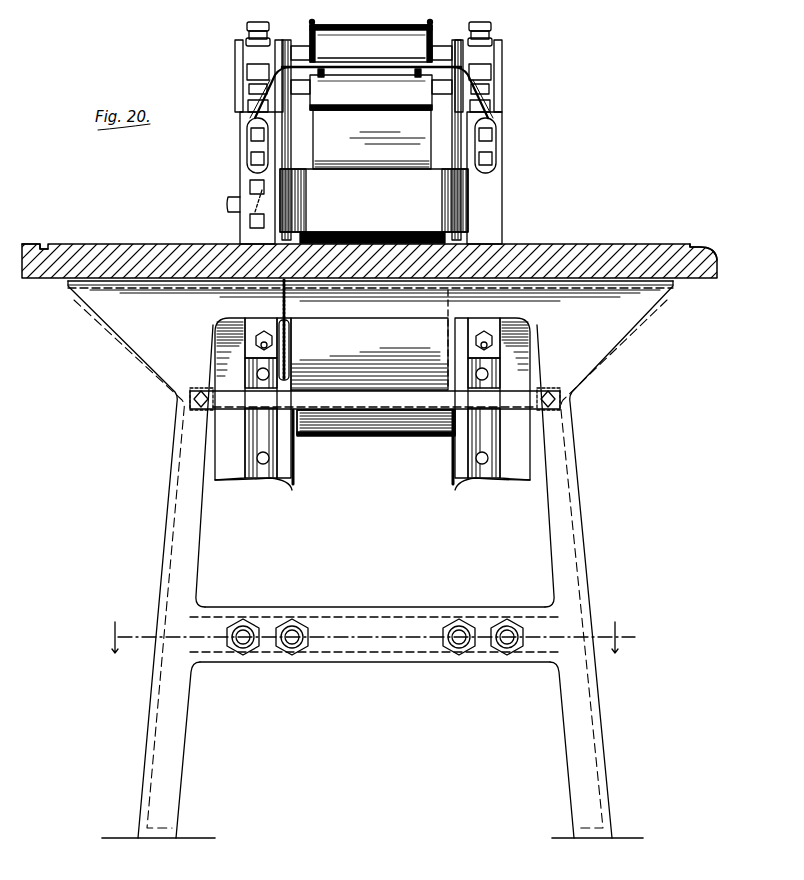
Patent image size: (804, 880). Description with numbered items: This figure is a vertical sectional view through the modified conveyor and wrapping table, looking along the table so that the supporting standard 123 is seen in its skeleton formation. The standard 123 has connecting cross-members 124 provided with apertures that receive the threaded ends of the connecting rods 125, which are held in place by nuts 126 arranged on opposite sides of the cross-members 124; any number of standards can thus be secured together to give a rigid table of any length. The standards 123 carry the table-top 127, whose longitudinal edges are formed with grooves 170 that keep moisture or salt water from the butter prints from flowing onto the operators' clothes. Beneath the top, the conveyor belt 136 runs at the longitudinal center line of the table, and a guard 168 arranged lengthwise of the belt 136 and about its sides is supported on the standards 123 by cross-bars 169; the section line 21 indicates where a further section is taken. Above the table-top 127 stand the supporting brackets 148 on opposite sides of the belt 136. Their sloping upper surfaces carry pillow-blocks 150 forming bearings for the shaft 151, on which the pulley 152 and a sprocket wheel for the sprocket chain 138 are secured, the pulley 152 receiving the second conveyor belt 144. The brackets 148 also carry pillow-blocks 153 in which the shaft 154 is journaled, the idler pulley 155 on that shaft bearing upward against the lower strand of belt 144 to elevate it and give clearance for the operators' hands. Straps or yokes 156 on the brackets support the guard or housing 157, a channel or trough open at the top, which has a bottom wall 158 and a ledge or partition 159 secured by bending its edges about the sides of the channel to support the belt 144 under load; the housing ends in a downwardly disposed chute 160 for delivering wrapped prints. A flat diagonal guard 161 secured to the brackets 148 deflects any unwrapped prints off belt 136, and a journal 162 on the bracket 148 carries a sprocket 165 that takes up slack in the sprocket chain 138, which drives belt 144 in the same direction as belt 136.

The section line 21- 21 is at (364, 637).
The supporting standards 123 is at (167, 518).
The connecting cross-members 124 is at (356, 640).
The connecting rods 125 is at (290, 650).
The nuts 126 is at (255, 622).
The table-top 127 is at (114, 243).
The conveyor belt 136 is at (398, 235).
The sprocket chain 138 is at (262, 146).
The second conveyor belt 144 is at (352, 60).
The supporting brackets 148 is at (240, 178).
The pillow-blocks 150 is at (492, 36).
The shaft 151 is at (483, 40).
The pulley 152 is at (446, 52).
The pillow-blocks 153 is at (498, 100).
The shaft 154 is at (455, 95).
The idler pulley 155 is at (372, 139).
The straps or yokes 156 is at (490, 142).
The guard or housing 157 is at (310, 35).
The bottom wall 158 is at (371, 92).
The ledge or partition 159 is at (418, 26).
The chute 160 is at (344, 168).
The guard 161 is at (450, 196).
The journal 162 is at (244, 218).
The sprocket 165 is at (300, 198).
The guard 168 is at (365, 418).
The cross-bars 169 is at (520, 398).
The grooves 170 is at (48, 246).